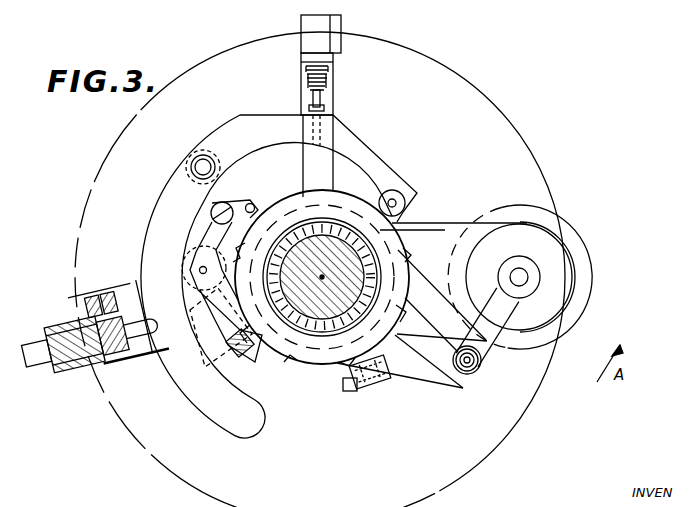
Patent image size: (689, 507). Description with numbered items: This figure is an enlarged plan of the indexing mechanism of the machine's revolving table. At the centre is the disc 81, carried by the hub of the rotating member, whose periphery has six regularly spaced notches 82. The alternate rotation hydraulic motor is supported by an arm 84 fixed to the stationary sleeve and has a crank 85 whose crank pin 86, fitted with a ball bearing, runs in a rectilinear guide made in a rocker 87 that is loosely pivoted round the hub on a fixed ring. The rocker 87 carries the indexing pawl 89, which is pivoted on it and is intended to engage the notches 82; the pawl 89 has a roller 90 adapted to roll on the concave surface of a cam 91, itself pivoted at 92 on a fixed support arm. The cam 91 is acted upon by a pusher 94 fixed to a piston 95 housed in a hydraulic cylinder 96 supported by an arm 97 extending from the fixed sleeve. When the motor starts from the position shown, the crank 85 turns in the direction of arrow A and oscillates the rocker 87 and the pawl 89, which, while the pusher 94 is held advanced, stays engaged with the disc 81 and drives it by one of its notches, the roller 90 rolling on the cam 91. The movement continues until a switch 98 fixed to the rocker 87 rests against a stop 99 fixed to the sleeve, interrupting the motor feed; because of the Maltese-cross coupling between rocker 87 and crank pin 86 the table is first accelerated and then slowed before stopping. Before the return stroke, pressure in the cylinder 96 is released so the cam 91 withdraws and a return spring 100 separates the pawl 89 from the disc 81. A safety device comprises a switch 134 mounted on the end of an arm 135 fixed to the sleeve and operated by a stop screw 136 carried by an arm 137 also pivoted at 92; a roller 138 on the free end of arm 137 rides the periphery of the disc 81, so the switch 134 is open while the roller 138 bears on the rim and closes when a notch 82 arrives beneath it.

The switch 134 is at (320, 32).
The arm 135 is at (307, 95).
The stop screw 136 is at (330, 100).
The arm 137 is at (373, 160).
The roller 138 is at (402, 176).
The pivot 92 is at (200, 156).
The cam 91 is at (244, 401).
The disc 81 is at (392, 232).
The notches 82 is at (432, 272).
The arm 84 is at (452, 228).
The crank 85 is at (510, 352).
The crank pin 86 is at (473, 375).
The rocker 87 is at (427, 373).
The stop 99 is at (355, 390).
The pawl 89 is at (200, 236).
The return spring 100 is at (251, 203).
The roller 90 is at (184, 267).
The switch 98 is at (222, 362).
The hydraulic cylinder 96 is at (62, 316).
The piston 95 is at (88, 362).
The arm 97 is at (128, 292).
The pusher 94 is at (146, 368).